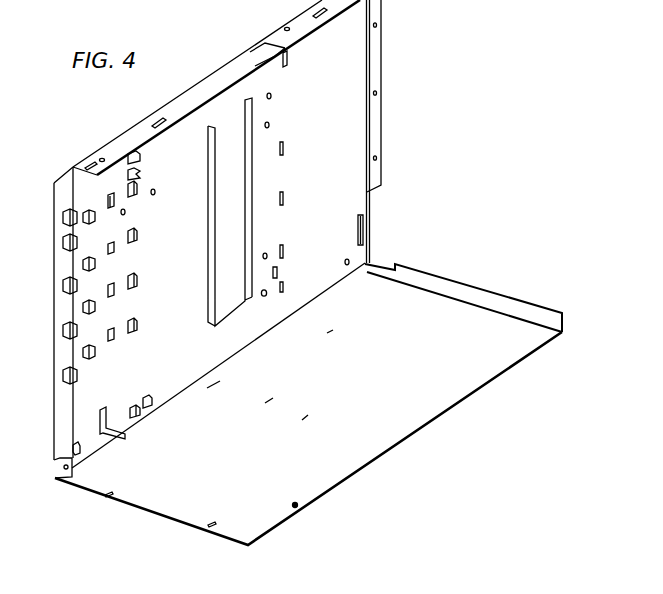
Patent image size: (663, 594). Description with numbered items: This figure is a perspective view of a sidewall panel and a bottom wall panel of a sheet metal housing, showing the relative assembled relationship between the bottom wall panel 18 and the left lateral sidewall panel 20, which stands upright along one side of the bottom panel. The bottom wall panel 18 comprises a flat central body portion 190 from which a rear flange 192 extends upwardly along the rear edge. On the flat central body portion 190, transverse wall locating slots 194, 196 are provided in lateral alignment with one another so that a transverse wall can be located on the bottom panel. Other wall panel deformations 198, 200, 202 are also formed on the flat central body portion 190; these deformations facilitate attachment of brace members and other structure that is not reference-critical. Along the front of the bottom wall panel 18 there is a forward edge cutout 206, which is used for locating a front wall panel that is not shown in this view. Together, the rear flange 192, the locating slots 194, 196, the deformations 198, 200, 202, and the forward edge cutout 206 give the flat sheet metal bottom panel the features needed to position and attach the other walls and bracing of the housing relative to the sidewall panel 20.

The bottom wall panel 18 is at (318, 417).
The left lateral sidewall panel 20 is at (350, 48).
The flat central body portion 190 is at (243, 520).
The rear flange 192 is at (523, 308).
The transverse wall locating slot 194 is at (407, 354).
The transverse wall locating slot 196 is at (465, 375).
The wall panel deformation 198 is at (204, 396).
The wall panel deformation 200 is at (284, 420).
The wall panel deformation 202 is at (296, 506).
The forward edge cutout 206 is at (173, 517).